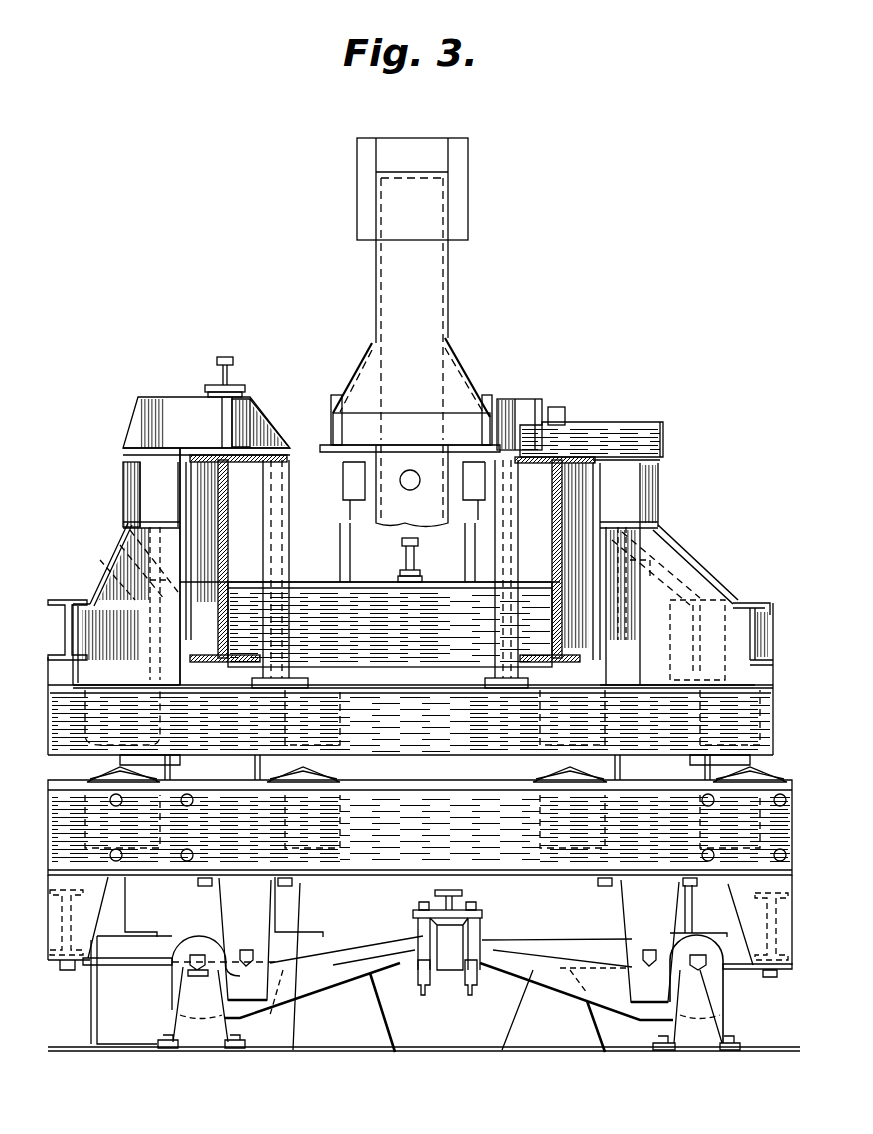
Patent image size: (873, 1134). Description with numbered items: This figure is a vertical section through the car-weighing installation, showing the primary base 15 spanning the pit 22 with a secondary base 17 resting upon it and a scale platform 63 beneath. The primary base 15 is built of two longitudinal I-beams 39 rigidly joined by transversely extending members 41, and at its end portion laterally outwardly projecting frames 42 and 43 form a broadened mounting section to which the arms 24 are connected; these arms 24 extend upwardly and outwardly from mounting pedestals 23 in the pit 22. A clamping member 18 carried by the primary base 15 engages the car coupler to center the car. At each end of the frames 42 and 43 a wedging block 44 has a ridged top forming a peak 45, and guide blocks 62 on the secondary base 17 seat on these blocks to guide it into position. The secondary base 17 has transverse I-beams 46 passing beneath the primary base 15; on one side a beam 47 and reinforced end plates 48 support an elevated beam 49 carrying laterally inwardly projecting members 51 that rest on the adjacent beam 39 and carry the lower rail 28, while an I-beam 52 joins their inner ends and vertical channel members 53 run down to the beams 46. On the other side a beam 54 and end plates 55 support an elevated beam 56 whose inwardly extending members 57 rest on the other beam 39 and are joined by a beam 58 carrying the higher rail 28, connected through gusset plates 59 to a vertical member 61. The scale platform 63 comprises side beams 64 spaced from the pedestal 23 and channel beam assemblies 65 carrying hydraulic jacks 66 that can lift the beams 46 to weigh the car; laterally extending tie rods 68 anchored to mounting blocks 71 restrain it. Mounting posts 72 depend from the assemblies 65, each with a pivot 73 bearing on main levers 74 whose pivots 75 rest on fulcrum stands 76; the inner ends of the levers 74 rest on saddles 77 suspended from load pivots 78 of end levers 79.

The primary base 15 is at (394, 571).
The secondary base 17 is at (670, 500).
The clamping member 18 is at (450, 262).
The pit 22 is at (782, 1019).
The mounting pedestal 23 is at (335, 942).
The arm 24 is at (256, 776).
The rail 28 is at (226, 357).
The I-beam 39 is at (225, 560).
The transversely extending member 41 is at (324, 582).
The laterally outwardly projecting frame 42 is at (698, 568).
The laterally outwardly projecting frame 43 is at (104, 565).
The wedging block 44 is at (124, 548).
The peak 45 is at (128, 522).
The I-beam 46 is at (411, 742).
The beam 47 is at (758, 630).
The end plate 48 is at (712, 578).
The beam 49 is at (657, 465).
The laterally inwardly projecting member 51 is at (614, 425).
The I-beam 52 is at (503, 398).
The vertical channel member 53 is at (498, 607).
The beam 54 is at (60, 630).
The end plate 55 is at (96, 584).
The beam 56 is at (127, 475).
The laterally inwardly extending member 57 is at (178, 405).
The beam 58 is at (234, 415).
The gusset plate 59 is at (258, 428).
The vertical member 61 is at (292, 607).
The guide block 62 is at (168, 527).
The scale platform 63 is at (372, 886).
The side beam 64 is at (128, 905).
The channel beam assembly 65 is at (582, 870).
The hydraulic jack 66 is at (175, 770).
The laterally extending tie rod 68 is at (120, 963).
The mounting block 71 is at (395, 1032).
The mounting post 72 is at (235, 912).
The pivot 73 is at (248, 950).
The main lever 74 is at (395, 955).
The pivot 75 is at (190, 965).
The fulcrum stand 76 is at (188, 1020).
The saddle 77 is at (418, 985).
The load pivot 78 is at (455, 920).
The end lever 79 is at (450, 890).